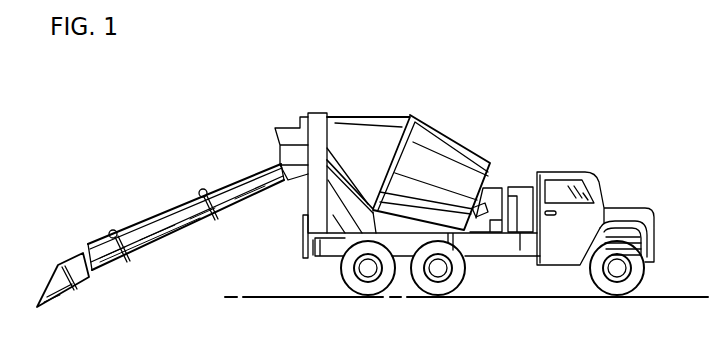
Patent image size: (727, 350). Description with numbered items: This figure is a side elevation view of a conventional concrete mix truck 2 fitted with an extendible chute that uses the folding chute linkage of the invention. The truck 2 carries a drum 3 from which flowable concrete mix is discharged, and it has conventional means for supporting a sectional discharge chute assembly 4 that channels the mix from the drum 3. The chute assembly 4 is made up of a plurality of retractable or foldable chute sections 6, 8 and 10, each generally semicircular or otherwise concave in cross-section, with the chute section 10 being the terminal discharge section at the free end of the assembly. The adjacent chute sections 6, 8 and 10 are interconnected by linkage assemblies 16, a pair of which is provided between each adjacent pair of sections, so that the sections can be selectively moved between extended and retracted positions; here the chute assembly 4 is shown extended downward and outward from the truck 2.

The concrete mix truck 2 is at (482, 144).
The drum 3 is at (438, 137).
The sectional discharge chute assembly 4 is at (145, 193).
The chute section 6 is at (243, 200).
The chute section 8 is at (173, 232).
The terminal discharge section 10 is at (113, 273).
The linkage assembly 16 is at (111, 224).